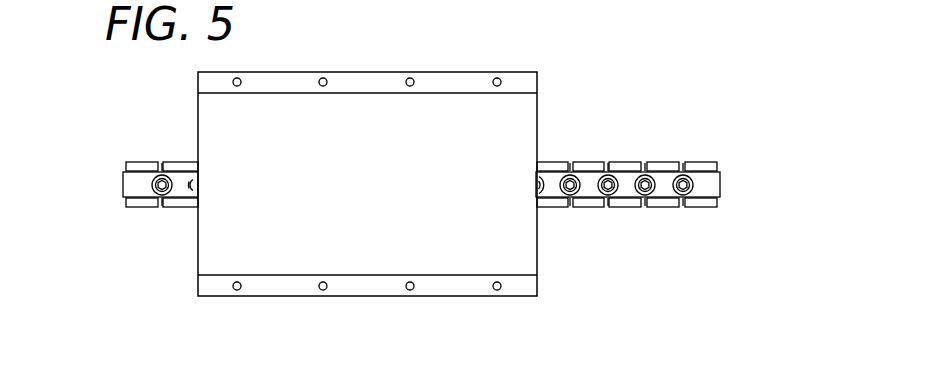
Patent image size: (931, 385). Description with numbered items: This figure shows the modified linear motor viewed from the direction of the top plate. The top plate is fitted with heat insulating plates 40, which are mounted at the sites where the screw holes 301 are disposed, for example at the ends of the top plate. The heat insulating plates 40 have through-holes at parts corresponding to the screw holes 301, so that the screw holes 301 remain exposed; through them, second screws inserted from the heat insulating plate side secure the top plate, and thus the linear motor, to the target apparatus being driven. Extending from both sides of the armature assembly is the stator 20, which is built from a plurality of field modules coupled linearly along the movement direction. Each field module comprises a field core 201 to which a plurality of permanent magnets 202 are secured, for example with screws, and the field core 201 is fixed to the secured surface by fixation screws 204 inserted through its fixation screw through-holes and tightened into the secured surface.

The stator 20 is at (660, 176).
The heat insulating plate 40 is at (372, 186).
The field core 201 is at (130, 191).
The magnet 202 is at (698, 165).
The fixation screw 204 is at (608, 168).
The screw hole 301 is at (500, 72).